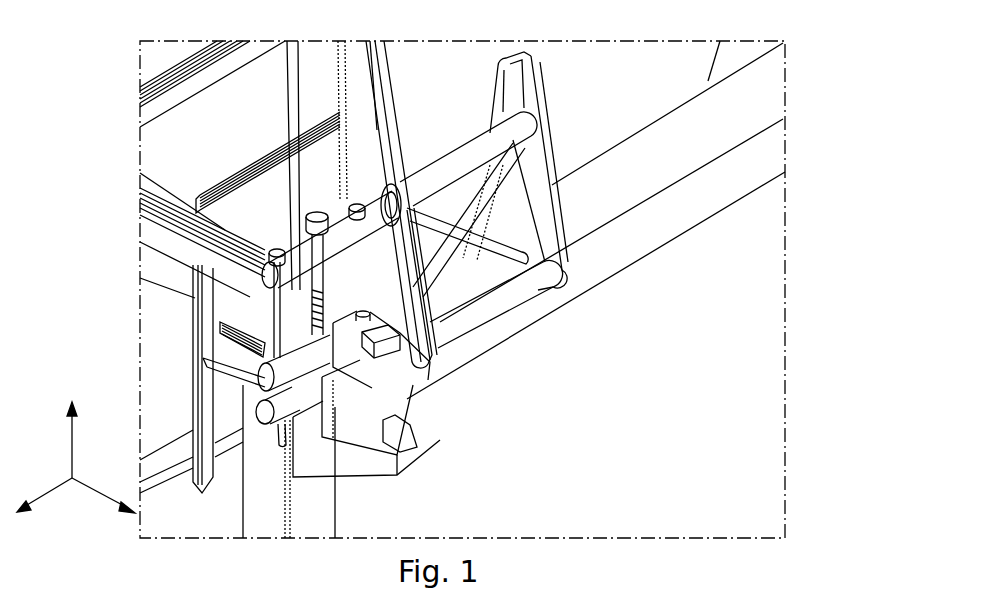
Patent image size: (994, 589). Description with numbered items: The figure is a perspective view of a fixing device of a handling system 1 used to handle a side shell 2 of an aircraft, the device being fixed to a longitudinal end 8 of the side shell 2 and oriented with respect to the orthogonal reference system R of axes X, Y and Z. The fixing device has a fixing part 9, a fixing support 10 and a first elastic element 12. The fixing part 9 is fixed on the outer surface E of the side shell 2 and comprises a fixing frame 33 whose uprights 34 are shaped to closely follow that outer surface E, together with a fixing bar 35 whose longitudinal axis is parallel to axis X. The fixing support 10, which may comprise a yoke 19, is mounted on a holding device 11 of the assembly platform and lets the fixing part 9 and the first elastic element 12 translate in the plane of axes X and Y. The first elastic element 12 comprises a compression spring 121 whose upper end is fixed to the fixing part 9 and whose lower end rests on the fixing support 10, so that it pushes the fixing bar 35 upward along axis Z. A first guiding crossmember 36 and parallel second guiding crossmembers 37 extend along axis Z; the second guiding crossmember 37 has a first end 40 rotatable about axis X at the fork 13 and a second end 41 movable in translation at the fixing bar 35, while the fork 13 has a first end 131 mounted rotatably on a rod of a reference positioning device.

The handling system 1 is at (793, 193).
The side shell 2 is at (380, 107).
The longitudinal end 8 is at (346, 100).
The fixing part 9 is at (461, 146).
The fixing support 10 is at (240, 350).
The holding device 11 is at (268, 473).
The first elastic element 12 is at (250, 303).
The compression spring 121 is at (250, 317).
The first end 131 is at (250, 327).
The fork 13 is at (241, 235).
The yoke 19 is at (352, 380).
The fixing frame 33 is at (563, 185).
The upright 34 is at (383, 153).
The fixing bar 35 is at (490, 137).
The first guiding crossmember 36 is at (300, 275).
The second guiding crossmember 37 is at (255, 258).
The first end 40 is at (357, 202).
The second end 41 is at (287, 257).
The outer surface E is at (572, 110).
The orthogonal reference system R is at (58, 466).